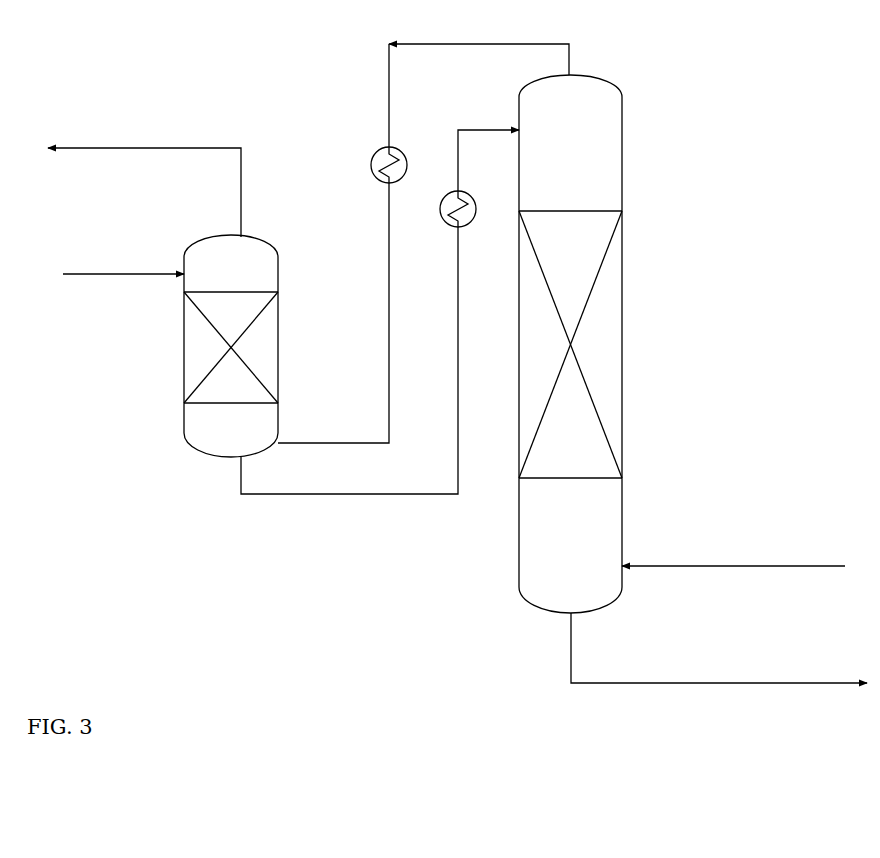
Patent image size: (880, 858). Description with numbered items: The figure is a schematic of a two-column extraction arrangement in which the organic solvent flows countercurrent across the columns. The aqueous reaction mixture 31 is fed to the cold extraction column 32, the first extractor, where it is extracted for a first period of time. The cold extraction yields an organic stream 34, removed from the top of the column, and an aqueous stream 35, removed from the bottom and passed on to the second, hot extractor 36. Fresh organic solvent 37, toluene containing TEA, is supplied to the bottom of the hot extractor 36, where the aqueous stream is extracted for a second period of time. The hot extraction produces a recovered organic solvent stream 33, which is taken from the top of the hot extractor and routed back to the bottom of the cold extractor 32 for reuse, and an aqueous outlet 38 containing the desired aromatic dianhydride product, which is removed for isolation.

The aqueous reaction mixture 31 is at (123, 294).
The cold extraction column 32 is at (231, 346).
The organic solvent stream 33 is at (423, 243).
The organic stream 34 is at (144, 192).
The aqueous stream 35 is at (380, 327).
The hot extractor 36 is at (570, 344).
The fresh organic solvent 37 is at (733, 554).
The aqueous outlet 38 is at (719, 648).